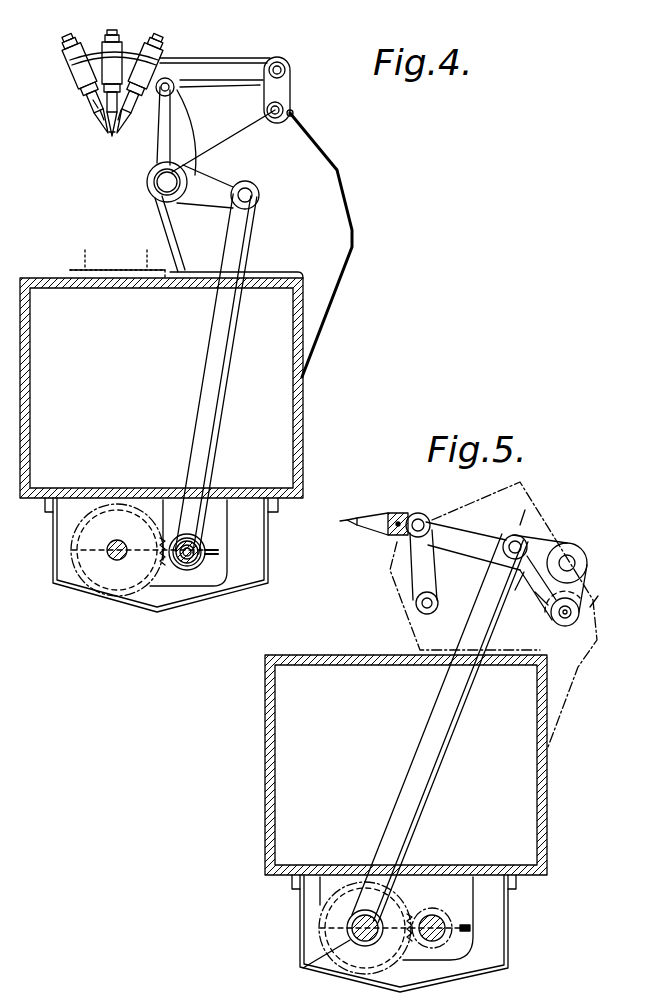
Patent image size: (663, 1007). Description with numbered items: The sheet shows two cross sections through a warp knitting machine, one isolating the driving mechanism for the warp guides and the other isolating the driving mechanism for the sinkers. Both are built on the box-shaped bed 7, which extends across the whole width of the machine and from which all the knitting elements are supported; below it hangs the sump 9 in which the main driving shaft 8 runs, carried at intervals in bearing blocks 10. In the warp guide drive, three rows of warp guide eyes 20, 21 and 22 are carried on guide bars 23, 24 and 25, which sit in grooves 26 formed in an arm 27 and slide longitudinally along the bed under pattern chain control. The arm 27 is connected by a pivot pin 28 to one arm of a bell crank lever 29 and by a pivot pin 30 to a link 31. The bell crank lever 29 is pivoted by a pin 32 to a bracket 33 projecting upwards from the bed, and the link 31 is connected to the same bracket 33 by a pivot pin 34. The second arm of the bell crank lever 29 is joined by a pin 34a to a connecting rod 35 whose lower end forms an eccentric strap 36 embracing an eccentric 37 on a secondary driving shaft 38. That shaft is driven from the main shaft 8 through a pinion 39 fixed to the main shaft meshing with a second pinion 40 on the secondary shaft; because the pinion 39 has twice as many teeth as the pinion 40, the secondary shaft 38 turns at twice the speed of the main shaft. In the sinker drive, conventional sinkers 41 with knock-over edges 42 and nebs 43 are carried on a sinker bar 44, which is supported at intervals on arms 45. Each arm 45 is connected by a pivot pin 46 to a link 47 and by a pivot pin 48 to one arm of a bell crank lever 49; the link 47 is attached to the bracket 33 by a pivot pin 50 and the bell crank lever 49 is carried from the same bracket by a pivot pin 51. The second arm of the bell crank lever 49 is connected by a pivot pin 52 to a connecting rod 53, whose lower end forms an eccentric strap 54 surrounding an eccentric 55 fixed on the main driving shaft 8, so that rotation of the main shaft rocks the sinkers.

In FIG. 4, the box-shaped bed 7 is at (297, 395).
In FIG. 5, the box-shaped bed 7 is at (545, 793).
In FIG. 4, the main driving shaft 8 is at (117, 557).
In FIG. 5, the main driving shaft 8 is at (358, 932).
In FIG. 4, the sump 9 is at (53, 555).
In FIG. 5, the sump 9 is at (510, 923).
In FIG. 4, the bearing blocks 10 is at (80, 512).
In FIG. 5, the bearing blocks 10 is at (458, 890).
In FIG. 4, the warp guide eyes 20 is at (102, 112).
In FIG. 4, the warp guide eyes 21 is at (112, 135).
In FIG. 4, the warp guide eyes 22 is at (120, 113).
In FIG. 4, the guide bar 23 is at (98, 100).
In FIG. 4, the guide bar 24 is at (92, 88).
In FIG. 4, the guide bar 25 is at (148, 110).
In FIG. 4, the grooves 26 is at (92, 100).
In FIG. 4, the arm 27 is at (98, 58).
In FIG. 4, the pivot pin 28 is at (167, 82).
In FIG. 4, the bell crank lever 29 is at (190, 153).
In FIG. 4, the pivot pin 30 is at (285, 67).
In FIG. 4, the link 31 is at (282, 92).
In FIG. 4, the pins 32 is at (162, 188).
In FIG. 4, the brackets 33 is at (330, 172).
In FIG. 5, the brackets 33 is at (537, 522).
In FIG. 4, the pivot pins 34 is at (290, 113).
In FIG. 4, the pin 34a is at (259, 195).
In FIG. 4, the connecting rod 35 is at (213, 410).
In FIG. 4, the eccentric strap 36 is at (192, 569).
In FIG. 4, the eccentric 37 is at (183, 568).
In FIG. 4, the secondary driving shaft 38 is at (200, 543).
In FIG. 5, the secondary driving shaft 38 is at (447, 937).
In FIG. 4, the pinion 39 is at (82, 567).
In FIG. 5, the pinion 39 is at (383, 960).
In FIG. 4, the second pinion 40 is at (210, 563).
In FIG. 5, the second pinion 40 is at (447, 948).
In FIG. 5, the sinkers 41 is at (360, 524).
In FIG. 5, the knock-over edges 42 is at (347, 520).
In FIG. 5, the nebs 43 is at (357, 520).
In FIG. 5, the sinker bar 44 is at (397, 515).
In FIG. 5, the arm 45 is at (472, 548).
In FIG. 5, the pivot pin 46 is at (427, 517).
In FIG. 5, the link 47 is at (417, 580).
In FIG. 5, the pivot pin 48 is at (565, 626).
In FIG. 5, the bell crank lever 49 is at (550, 613).
In FIG. 5, the pivot pin 50 is at (422, 603).
In FIG. 5, the pivot pin 51 is at (573, 560).
In FIG. 5, the pivot pin 52 is at (522, 547).
In FIG. 5, the connecting rod 53 is at (437, 750).
In FIG. 5, the eccentric strap 54 is at (303, 968).
In FIG. 5, the eccentric 55 is at (357, 917).